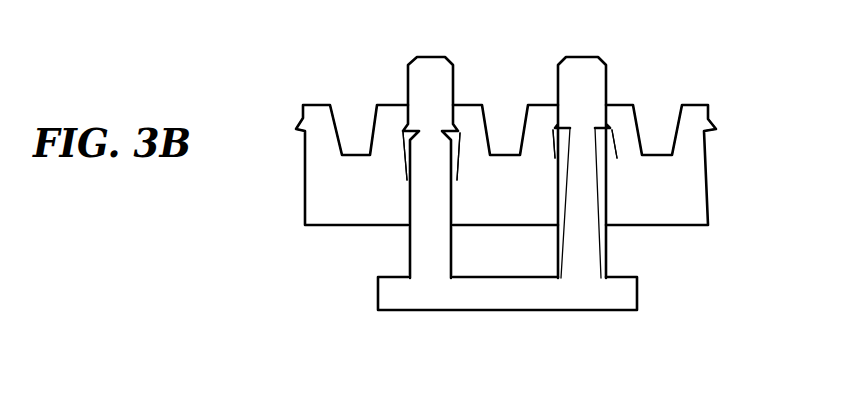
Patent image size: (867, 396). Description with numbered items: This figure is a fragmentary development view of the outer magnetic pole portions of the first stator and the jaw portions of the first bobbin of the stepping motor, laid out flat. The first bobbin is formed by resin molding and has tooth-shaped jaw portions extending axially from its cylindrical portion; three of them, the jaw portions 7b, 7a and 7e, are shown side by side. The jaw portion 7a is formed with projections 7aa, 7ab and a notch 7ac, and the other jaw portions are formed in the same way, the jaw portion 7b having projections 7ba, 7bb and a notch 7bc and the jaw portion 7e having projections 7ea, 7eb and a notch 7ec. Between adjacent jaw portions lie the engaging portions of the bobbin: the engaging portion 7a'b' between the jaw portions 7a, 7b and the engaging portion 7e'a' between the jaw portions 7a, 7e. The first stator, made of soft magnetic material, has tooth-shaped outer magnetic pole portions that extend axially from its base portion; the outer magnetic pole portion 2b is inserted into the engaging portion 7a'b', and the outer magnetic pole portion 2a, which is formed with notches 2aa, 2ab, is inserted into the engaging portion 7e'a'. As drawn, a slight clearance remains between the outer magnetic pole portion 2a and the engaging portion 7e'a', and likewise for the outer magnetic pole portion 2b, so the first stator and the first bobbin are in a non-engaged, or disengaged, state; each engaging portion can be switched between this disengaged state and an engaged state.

The first outer magnetic pole portion 2a is at (579, 64).
The first outer magnetic pole portion 2b is at (428, 66).
The notch 2aa is at (560, 279).
The notch 2ab is at (603, 279).
The jaw portion 7a is at (499, 196).
The jaw portion 7b is at (357, 218).
The jaw portion 7e is at (684, 127).
The projection 7aa is at (545, 120).
The projection 7ab is at (461, 118).
The notch 7ac is at (505, 152).
The projection 7ba is at (396, 118).
The projection 7bb is at (297, 126).
The notch 7bc is at (358, 152).
The projection 7ea is at (717, 126).
The projection 7eb is at (613, 120).
The notch 7ec is at (654, 152).
The engaging portion 7a'b' is at (347, 169).
The engaging portion 7e'a' is at (611, 201).